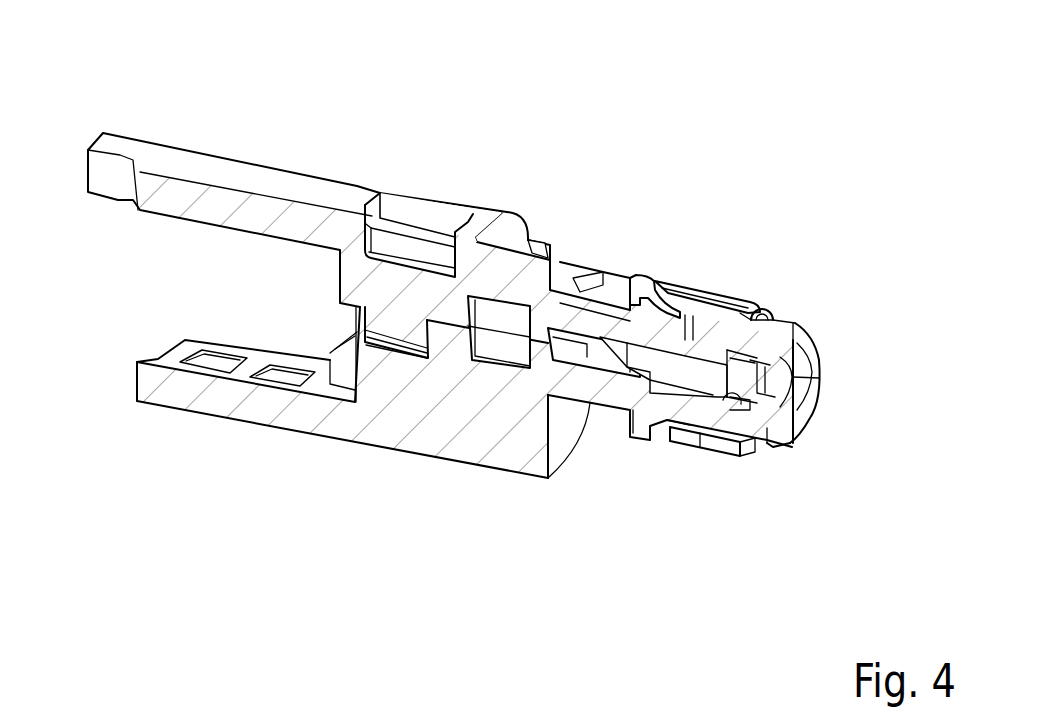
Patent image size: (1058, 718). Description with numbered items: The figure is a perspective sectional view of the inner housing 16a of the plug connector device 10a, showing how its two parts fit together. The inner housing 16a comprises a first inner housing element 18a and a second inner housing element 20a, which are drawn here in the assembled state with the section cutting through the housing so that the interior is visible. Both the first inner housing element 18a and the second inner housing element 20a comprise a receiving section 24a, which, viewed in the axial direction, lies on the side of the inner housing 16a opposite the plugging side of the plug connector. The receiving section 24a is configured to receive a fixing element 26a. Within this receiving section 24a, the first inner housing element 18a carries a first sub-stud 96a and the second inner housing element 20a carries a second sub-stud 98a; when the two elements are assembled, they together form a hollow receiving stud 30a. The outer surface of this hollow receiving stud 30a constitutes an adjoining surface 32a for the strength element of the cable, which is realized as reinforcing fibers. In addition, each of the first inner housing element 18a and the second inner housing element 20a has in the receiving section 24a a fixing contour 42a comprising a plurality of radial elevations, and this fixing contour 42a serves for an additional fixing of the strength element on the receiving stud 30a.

The plug connector device 10a is at (473, 135).
The first inner housing element 18a is at (240, 178).
The second inner housing element 20a is at (261, 405).
The inner housing 16a is at (643, 273).
The fixing element 26a is at (718, 298).
The adjoining surface 32a is at (747, 320).
The first sub-stud 96a is at (797, 343).
The second sub-stud 98a is at (805, 422).
The fixing contour 42a is at (733, 453).
The receiving section 24a is at (798, 503).
The hollow receiving stud 30a is at (750, 542).